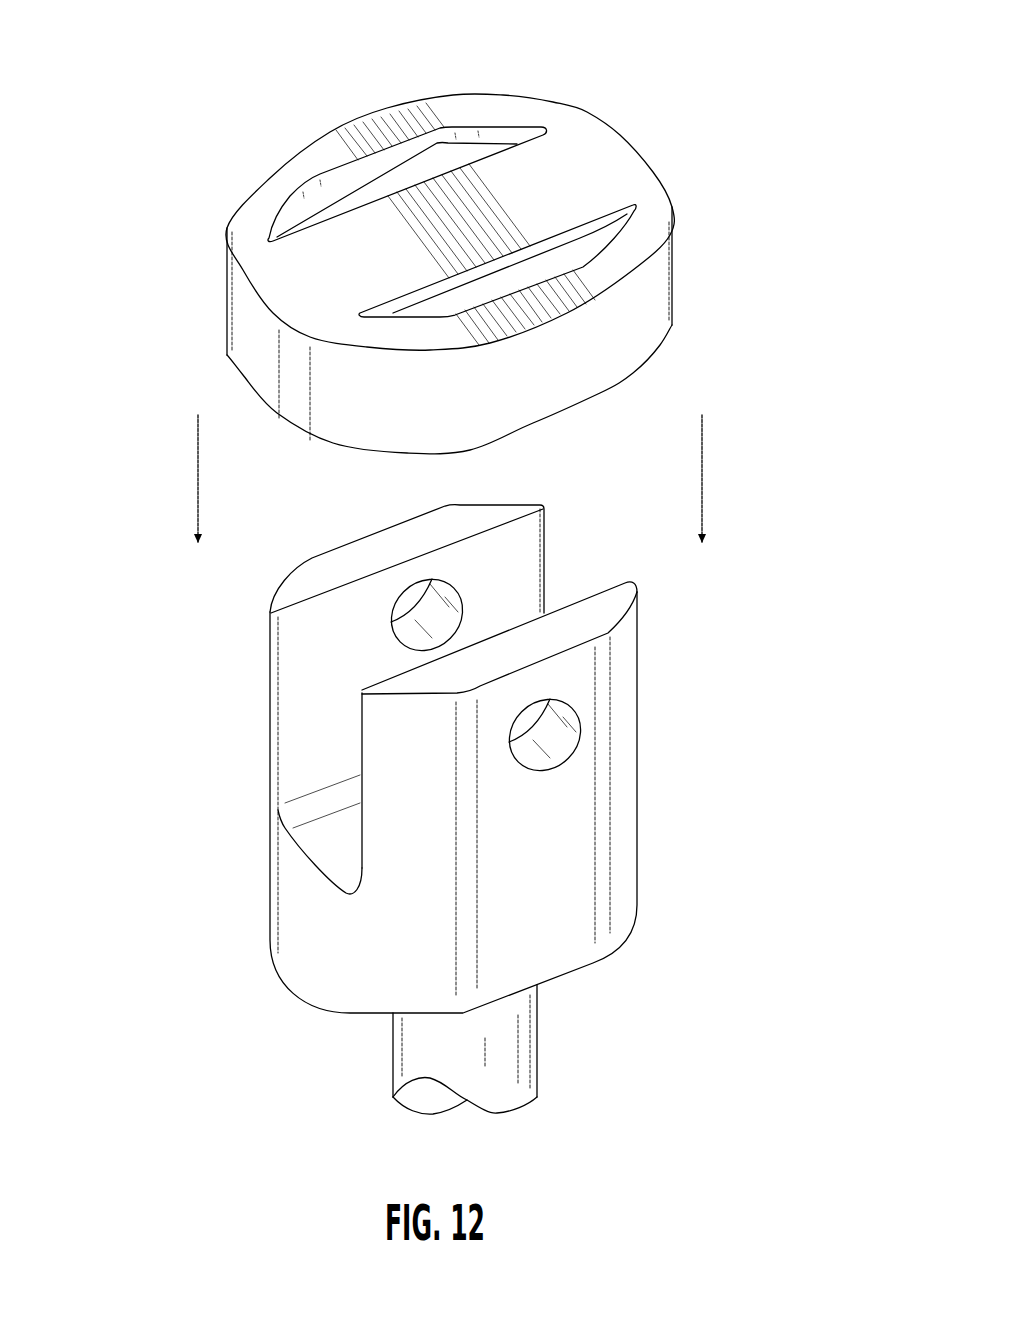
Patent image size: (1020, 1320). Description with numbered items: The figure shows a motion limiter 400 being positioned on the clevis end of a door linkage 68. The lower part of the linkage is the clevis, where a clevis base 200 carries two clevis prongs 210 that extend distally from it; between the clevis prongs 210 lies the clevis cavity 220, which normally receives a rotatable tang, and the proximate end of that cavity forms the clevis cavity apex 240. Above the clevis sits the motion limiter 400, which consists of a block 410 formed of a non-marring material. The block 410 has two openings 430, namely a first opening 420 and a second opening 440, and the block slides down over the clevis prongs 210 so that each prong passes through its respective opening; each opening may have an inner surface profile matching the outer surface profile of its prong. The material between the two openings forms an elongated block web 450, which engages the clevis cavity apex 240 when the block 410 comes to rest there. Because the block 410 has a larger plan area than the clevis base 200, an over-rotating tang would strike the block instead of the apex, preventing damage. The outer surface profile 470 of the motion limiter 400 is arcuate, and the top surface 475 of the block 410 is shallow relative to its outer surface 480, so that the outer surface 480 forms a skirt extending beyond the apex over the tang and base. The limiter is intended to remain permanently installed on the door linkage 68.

The motion limiter 400 is at (137, 128).
The block 410 is at (238, 355).
The first opening 420 is at (373, 167).
The openings 430 is at (488, 40).
The second opening 440 is at (573, 255).
The block web 450 is at (557, 197).
The outer surface profile 470 is at (640, 375).
The top surface 475 is at (260, 203).
The outer surface 480 is at (557, 400).
The door linkage 68 is at (214, 987).
The clevis base 200 is at (637, 907).
The clevis prongs 210 is at (637, 770).
The clevis cavity 220 is at (313, 867).
The clevis cavity apex 240 is at (312, 775).